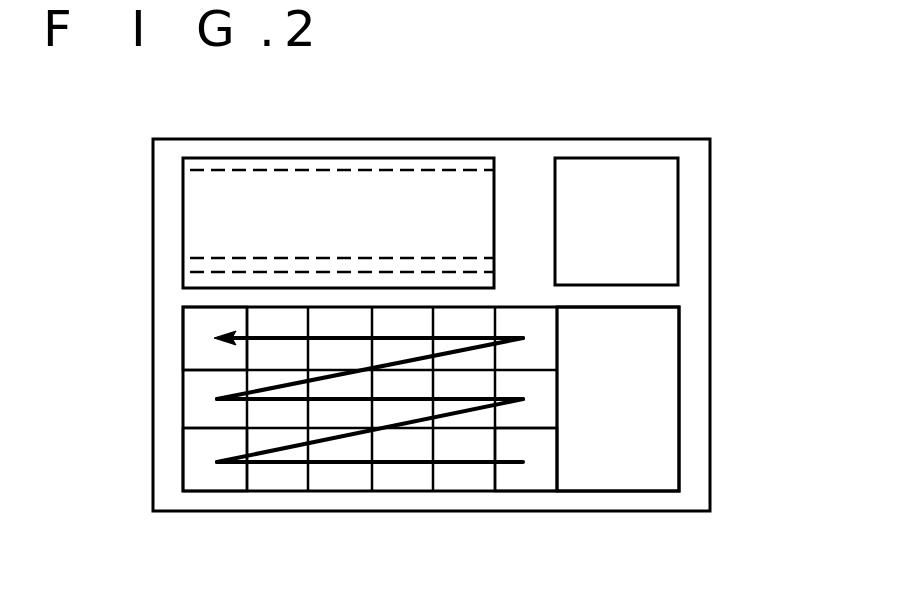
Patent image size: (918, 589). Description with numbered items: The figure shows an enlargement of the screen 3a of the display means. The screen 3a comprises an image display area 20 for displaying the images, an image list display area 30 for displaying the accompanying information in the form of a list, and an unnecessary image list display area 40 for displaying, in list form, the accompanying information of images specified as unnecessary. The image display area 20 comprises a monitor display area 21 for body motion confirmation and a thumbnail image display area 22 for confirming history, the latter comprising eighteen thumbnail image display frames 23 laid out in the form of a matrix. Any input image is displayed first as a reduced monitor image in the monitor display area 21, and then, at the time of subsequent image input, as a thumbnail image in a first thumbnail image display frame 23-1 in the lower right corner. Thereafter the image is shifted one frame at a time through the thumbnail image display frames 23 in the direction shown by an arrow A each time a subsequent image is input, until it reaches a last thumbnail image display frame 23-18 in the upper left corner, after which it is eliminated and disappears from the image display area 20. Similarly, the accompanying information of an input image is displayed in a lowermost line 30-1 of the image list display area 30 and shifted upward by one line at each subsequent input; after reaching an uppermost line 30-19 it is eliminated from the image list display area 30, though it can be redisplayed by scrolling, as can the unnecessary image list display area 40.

The screen 3a is at (710, 182).
The image list display area 30 is at (425, 157).
The uppermost line 30-19 is at (183, 170).
The lowermost line 30-1 is at (183, 272).
The unnecessary image list display area 40 is at (618, 157).
The image display area 20 is at (679, 383).
The thumbnail image display area 22 is at (332, 492).
The thumbnail image display frames 23 is at (218, 486).
The last thumbnail image display frame 23-18 is at (193, 337).
The first thumbnail image display frame 23-1 is at (530, 477).
The monitor display area 21 is at (620, 490).
The arrow A is at (401, 466).